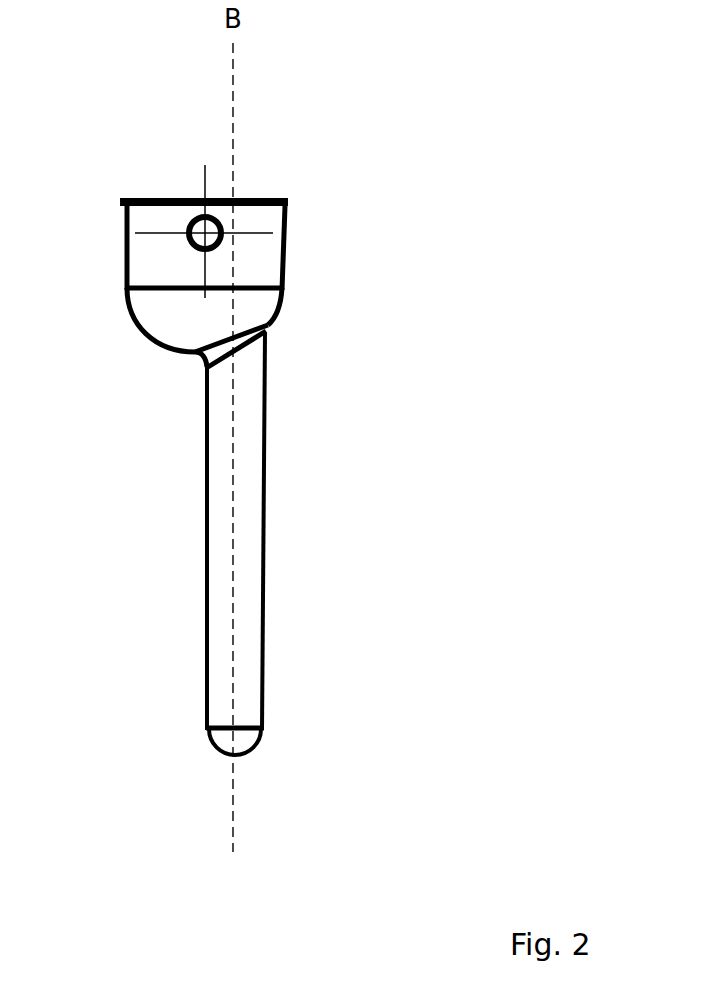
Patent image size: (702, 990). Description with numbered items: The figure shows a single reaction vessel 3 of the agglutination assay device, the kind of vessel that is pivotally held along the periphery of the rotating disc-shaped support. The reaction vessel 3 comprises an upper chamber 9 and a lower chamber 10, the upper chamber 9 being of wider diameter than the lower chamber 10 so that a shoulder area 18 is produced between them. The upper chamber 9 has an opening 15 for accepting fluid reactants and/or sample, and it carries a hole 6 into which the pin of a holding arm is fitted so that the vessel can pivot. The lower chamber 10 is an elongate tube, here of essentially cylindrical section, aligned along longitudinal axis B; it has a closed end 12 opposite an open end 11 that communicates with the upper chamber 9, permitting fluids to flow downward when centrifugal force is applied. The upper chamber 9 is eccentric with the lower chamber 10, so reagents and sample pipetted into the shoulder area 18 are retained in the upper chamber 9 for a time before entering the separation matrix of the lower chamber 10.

The reaction vessel 3 is at (211, 440).
The hole 6 is at (186, 237).
The upper chamber 9 is at (296, 200).
The lower chamber 10 is at (296, 330).
The open end 11 is at (213, 355).
The closed end 12 is at (252, 755).
The opening 15 is at (164, 191).
The shoulder area 18 is at (141, 337).